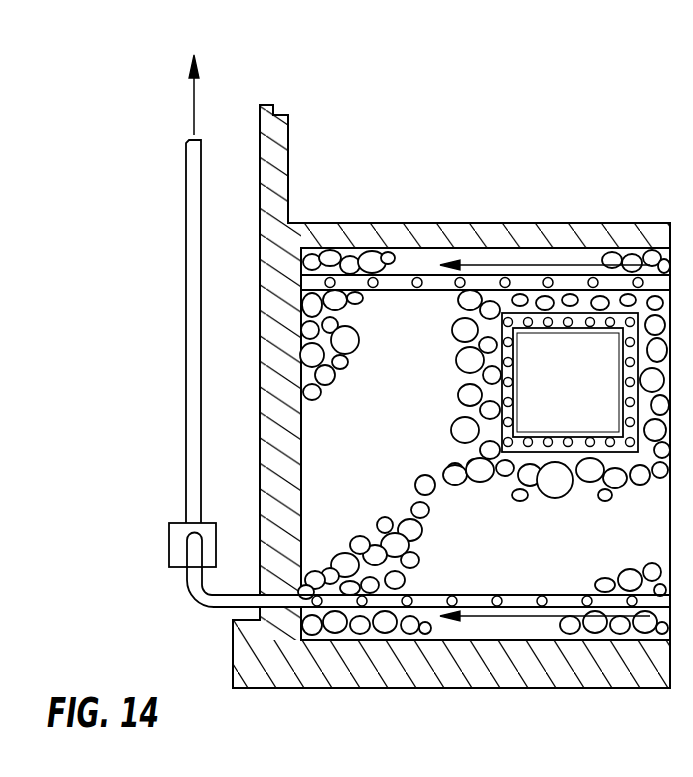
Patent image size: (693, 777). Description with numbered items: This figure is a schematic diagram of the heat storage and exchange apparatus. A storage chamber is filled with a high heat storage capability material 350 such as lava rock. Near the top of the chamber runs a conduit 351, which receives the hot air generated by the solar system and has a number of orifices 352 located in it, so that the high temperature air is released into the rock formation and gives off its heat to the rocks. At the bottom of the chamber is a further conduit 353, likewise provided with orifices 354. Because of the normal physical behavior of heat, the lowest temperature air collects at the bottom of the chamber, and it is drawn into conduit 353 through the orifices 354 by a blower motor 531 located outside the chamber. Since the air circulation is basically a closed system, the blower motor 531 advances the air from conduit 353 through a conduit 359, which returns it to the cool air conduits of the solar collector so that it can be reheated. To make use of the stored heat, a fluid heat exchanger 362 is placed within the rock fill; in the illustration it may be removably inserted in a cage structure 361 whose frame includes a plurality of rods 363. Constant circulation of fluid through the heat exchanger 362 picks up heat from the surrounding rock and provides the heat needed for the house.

The high heat storage capability material 350 is at (414, 493).
The conduit 351 is at (445, 291).
The orifices 352 is at (374, 292).
The further conduit 353 is at (556, 594).
The orifices 354 is at (453, 596).
The conduit 359 is at (184, 222).
The cage structure 361 is at (576, 438).
The fluid heat exchanger 362 is at (600, 393).
The rods 363 is at (546, 333).
The blower motor 531 is at (168, 547).